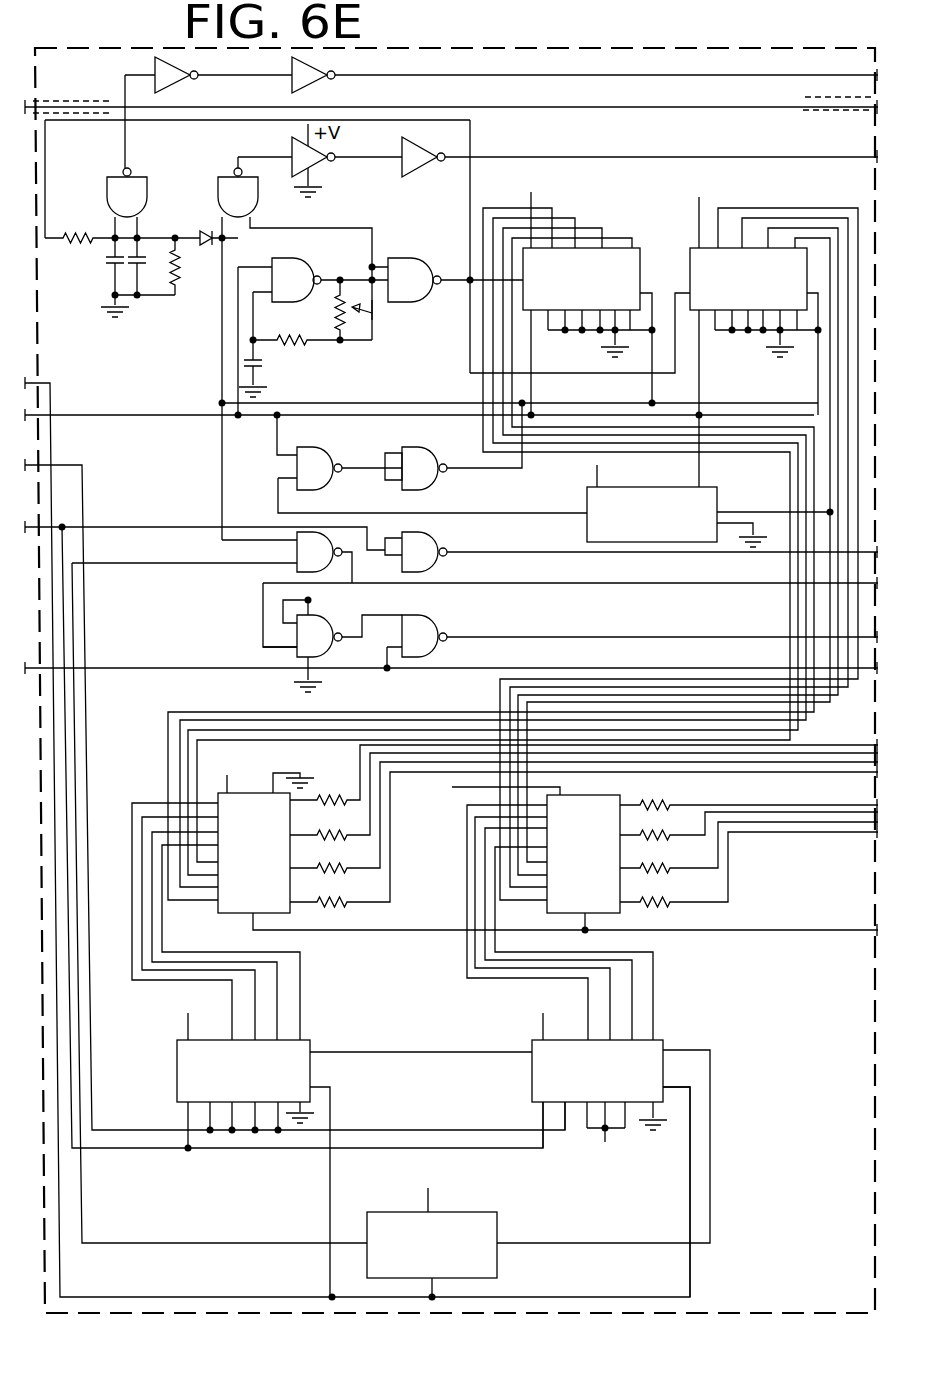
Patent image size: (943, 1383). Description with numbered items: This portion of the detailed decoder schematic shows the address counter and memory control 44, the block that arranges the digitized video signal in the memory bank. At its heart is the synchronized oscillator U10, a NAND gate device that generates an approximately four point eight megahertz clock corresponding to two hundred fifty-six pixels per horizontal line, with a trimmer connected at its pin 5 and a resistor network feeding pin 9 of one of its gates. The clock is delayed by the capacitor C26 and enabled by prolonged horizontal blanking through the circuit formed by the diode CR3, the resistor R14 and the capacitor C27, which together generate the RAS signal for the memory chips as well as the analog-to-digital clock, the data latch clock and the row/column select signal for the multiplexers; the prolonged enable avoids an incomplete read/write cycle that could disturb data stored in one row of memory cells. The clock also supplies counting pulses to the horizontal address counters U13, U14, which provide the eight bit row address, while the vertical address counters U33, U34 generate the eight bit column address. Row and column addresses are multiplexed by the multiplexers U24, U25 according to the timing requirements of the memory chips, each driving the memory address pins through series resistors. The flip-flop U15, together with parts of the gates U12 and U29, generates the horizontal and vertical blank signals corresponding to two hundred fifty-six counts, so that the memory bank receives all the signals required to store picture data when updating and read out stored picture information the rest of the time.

The address counter and memory control 44 is at (751, 40).
The synchronized oscillator U10 is at (143, 190).
The diode CR3 is at (207, 232).
The capacitor C26 is at (108, 262).
The capacitor C27 is at (140, 263).
The resistor R14 is at (178, 296).
The pin 9 is at (80, 229).
The pin 5 is at (372, 303).
The horizontal address counter U13 is at (491, 534).
The horizontal address counter U14 is at (664, 534).
The gate U29 is at (402, 452).
The flip-flop U15 is at (598, 879).
The gate U12 is at (297, 550).
The address multiplexer U24 is at (505, 892).
The address multiplexer U25 is at (648, 909).
The vertical address counter U33 is at (351, 1145).
The vertical address counter U34 is at (603, 1145).